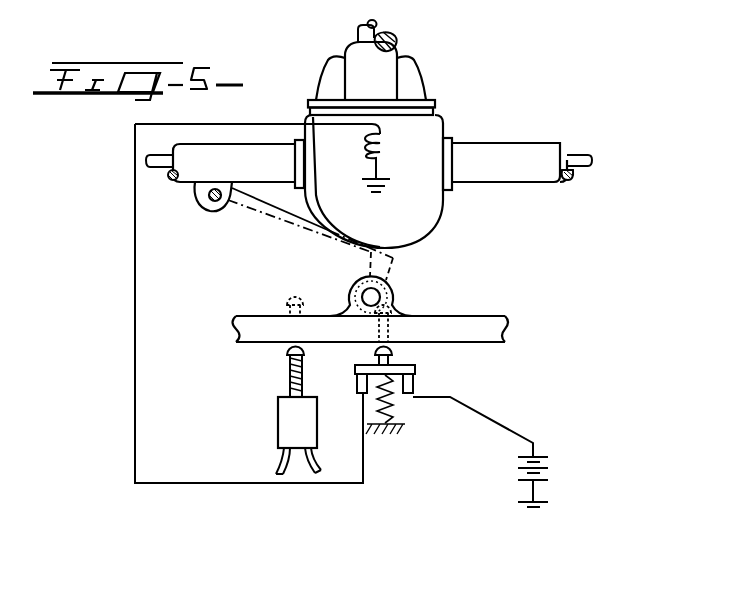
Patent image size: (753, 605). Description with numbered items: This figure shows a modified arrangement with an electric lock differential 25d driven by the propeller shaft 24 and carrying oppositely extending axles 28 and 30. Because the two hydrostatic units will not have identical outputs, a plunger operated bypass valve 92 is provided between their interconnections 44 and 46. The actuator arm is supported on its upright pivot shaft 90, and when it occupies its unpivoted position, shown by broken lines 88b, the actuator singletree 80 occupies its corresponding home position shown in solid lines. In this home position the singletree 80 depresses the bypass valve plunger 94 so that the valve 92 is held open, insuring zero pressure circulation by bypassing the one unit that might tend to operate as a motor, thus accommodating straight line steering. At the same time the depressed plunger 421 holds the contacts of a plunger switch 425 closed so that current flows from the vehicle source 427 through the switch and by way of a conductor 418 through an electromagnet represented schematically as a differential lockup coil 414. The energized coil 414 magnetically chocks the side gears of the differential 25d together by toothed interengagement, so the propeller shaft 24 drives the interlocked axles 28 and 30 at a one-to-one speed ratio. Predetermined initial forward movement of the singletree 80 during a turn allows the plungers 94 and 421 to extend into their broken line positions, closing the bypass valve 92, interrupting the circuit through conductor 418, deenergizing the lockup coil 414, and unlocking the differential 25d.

The propeller shaft 24 is at (377, 23).
The differential 25d is at (433, 100).
The axle 28 is at (162, 168).
The axle 30 is at (580, 157).
The upright pivot shaft 90 is at (205, 205).
The actuator arm (unpivoted position, broken lines) 88b is at (293, 236).
The differential lockup coil 414 is at (382, 157).
The actuator singletree 80 is at (455, 315).
The bypass valve plunger 94 is at (285, 351).
The bypass valve 92 is at (283, 419).
The interconnection 44 is at (280, 458).
The interconnection 46 is at (344, 446).
The plunger 421 is at (394, 352).
The plunger switch 425 is at (416, 372).
The vehicle source 427 is at (540, 457).
The conductor 418 is at (185, 483).